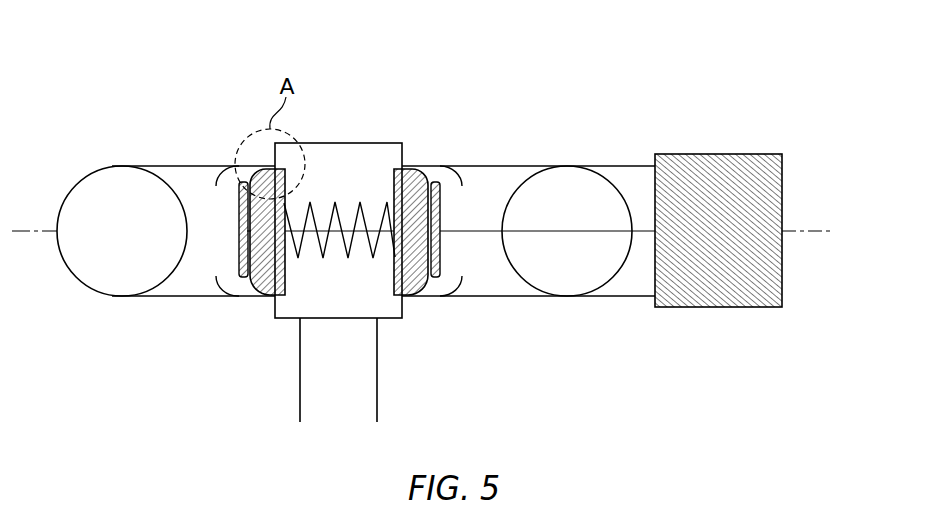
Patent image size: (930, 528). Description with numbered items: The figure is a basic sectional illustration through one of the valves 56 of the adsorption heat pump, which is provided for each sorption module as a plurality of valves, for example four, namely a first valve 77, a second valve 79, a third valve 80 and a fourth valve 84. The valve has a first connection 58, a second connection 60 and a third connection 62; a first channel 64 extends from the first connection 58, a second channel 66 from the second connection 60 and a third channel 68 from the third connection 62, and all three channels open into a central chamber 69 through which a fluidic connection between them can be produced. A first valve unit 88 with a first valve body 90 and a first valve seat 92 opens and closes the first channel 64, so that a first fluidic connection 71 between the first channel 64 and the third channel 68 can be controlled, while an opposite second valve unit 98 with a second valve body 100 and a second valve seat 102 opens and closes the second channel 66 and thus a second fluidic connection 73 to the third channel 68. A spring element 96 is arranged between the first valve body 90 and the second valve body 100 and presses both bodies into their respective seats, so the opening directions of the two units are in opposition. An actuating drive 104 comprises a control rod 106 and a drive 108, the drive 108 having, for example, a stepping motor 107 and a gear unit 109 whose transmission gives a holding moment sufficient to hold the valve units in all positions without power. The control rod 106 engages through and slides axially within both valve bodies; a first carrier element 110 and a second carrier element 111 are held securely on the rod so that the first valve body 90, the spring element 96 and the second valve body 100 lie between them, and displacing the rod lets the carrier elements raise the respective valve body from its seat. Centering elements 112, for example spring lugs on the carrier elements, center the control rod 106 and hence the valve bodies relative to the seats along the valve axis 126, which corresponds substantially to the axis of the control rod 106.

The valve 56 is at (561, 30).
The first valve 77 is at (561, 30).
The second valve 79 is at (561, 30).
The third valve 80 is at (561, 30).
The fourth valve 84 is at (519, 60).
The first connection 58 is at (110, 177).
The second connection 60 is at (570, 177).
The first channel 64 is at (177, 178).
The second channel 66 is at (520, 177).
The central chamber 69 is at (333, 160).
The spring element 96 is at (352, 202).
The first valve body 90 is at (260, 282).
The second valve body 100 is at (413, 171).
The centering elements 112 is at (218, 186).
The first valve seat 92 is at (274, 168).
The second carrier element 111 is at (438, 225).
The first carrier element 110 is at (240, 240).
The drive 108 is at (728, 191).
The stepping motor 107 is at (728, 191).
The gear unit 109 is at (699, 247).
The actuating drive 104 is at (639, 162).
The valve axis 126 is at (800, 231).
The control rod 106 is at (608, 232).
The second valve seat 102 is at (398, 306).
The third connection 62 is at (345, 400).
The third channel 68 is at (367, 397).
The first fluidic connection 71 is at (283, 333).
The first valve unit 88 is at (265, 321).
The second fluidic connection 73 is at (396, 331).
The second valve unit 98 is at (433, 313).